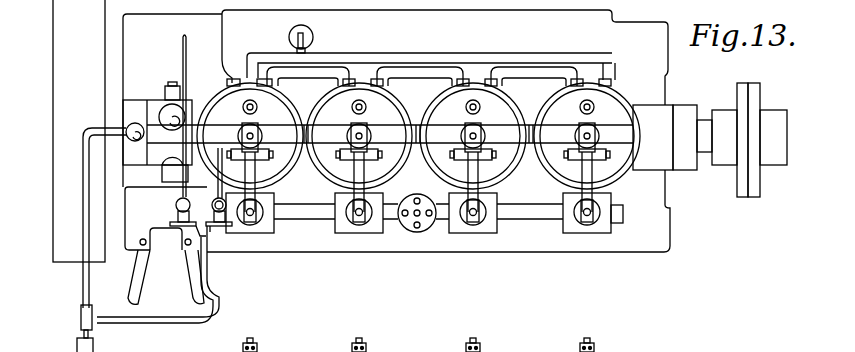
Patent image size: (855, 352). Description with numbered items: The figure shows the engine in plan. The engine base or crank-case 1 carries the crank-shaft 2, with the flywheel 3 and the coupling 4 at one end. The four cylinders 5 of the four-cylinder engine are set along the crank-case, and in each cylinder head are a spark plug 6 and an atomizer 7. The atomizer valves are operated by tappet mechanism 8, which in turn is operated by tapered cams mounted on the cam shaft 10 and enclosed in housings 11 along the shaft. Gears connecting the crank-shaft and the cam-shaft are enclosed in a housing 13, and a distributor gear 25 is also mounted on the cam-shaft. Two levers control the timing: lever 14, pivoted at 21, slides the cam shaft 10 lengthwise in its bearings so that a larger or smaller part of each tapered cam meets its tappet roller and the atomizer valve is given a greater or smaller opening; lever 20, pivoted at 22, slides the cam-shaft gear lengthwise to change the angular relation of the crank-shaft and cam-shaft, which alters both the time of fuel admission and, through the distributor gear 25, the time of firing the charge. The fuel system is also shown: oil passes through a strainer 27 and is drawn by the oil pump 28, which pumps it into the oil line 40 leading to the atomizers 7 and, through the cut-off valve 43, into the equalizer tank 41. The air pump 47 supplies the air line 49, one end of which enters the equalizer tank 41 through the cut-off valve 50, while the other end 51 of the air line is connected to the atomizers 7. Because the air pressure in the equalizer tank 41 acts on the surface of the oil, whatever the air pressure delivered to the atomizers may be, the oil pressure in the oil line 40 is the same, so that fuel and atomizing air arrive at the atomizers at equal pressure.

The engine base 1 is at (168, 23).
The crank-shaft 2 is at (703, 119).
The flywheel 3 is at (63, 17).
The coupling 4 is at (752, 92).
The cylinders 5 is at (612, 104).
The spark plugs 6 is at (357, 105).
The atomizers 7 is at (253, 127).
The tappet mechanism 8 is at (363, 170).
The cam shaft 10 is at (619, 213).
The housings 11 is at (492, 228).
The housing 13 is at (167, 222).
The lever 14 is at (144, 280).
The lever 20 is at (190, 288).
The pivot 21 is at (131, 252).
The pivot 22 is at (219, 280).
The distributor gear 25 is at (407, 232).
The strainer 27 is at (93, 351).
The oil pump 28 is at (128, 128).
The oil line 40 is at (530, 170).
The equalizer tank 41 is at (207, 207).
The cut-off valve 43 is at (216, 228).
The air pump 47 is at (172, 104).
The air line 49 is at (166, 218).
The cut-off valve 50 is at (212, 228).
The air line end 51 is at (186, 122).